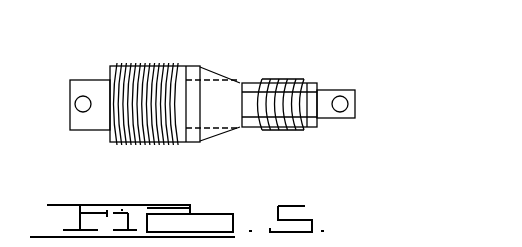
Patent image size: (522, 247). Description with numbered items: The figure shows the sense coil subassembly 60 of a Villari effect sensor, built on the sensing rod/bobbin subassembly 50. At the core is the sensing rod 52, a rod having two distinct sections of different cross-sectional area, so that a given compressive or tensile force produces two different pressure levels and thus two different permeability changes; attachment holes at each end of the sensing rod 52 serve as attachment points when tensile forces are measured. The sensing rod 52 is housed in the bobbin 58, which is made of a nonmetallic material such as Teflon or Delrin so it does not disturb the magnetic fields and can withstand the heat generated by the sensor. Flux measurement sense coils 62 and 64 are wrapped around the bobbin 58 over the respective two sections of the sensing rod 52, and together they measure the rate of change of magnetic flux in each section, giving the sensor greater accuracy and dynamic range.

The sensing rod/bobbin subassembly 50 is at (181, 97).
The sensing rod 52 is at (78, 123).
The bobbin 58 is at (215, 73).
The sense coil subassembly 60 is at (104, 76).
The sense coil 62 is at (147, 58).
The sense coil 64 is at (292, 70).